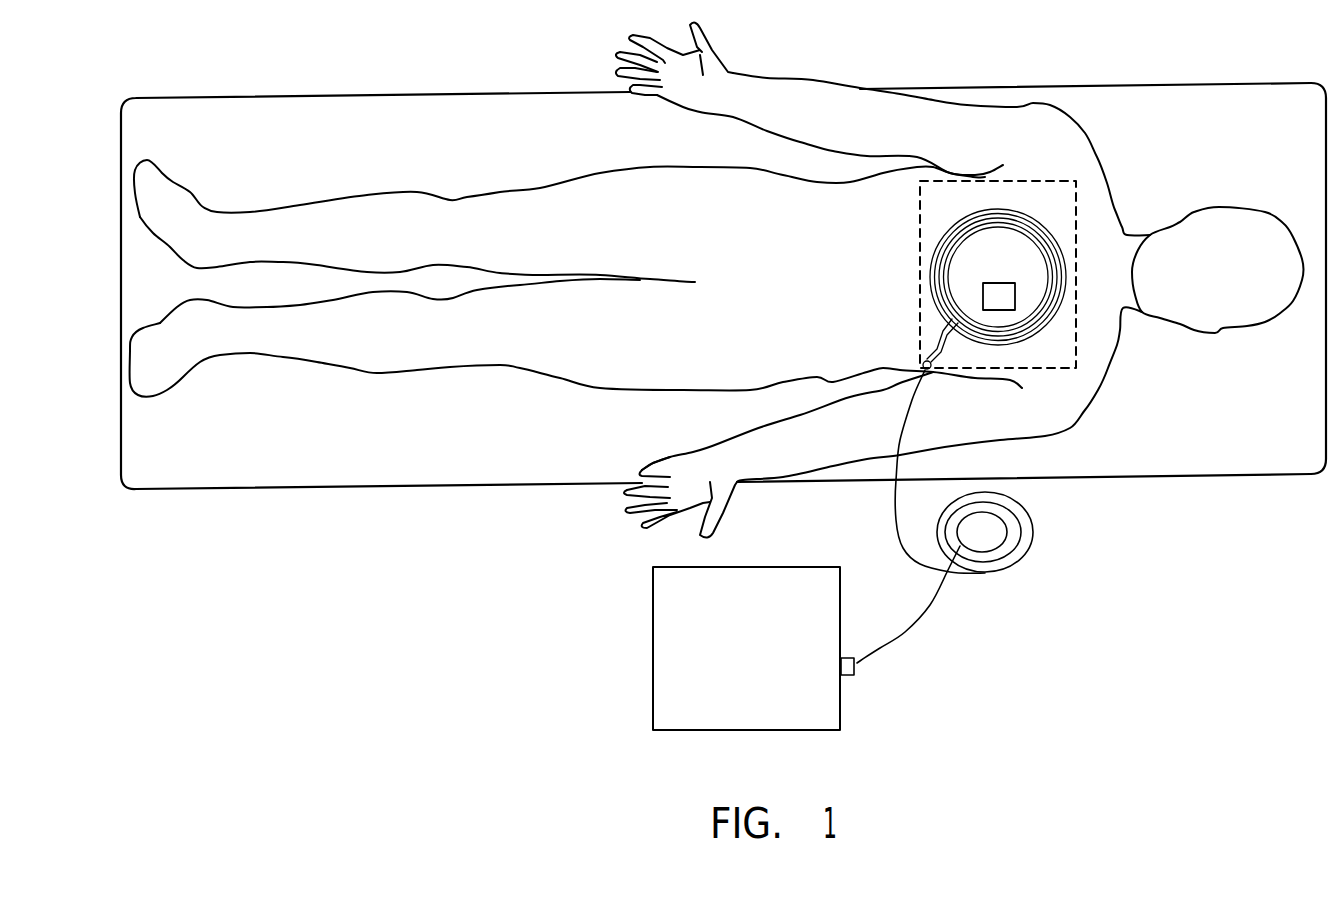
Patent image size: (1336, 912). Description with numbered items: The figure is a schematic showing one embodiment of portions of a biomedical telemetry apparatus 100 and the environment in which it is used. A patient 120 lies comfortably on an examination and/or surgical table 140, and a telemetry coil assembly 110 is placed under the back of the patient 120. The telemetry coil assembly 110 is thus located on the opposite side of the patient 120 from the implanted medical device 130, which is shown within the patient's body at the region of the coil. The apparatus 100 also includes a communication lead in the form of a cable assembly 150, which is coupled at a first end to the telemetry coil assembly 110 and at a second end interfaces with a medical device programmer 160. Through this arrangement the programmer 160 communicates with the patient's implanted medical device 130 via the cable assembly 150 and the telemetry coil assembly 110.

The biomedical telemetry apparatus 100 is at (1102, 660).
The telemetry coil assembly 110 is at (1057, 368).
The patient 120 is at (1105, 380).
The implanted medical device 130 is at (997, 283).
The examination and/or surgical table 140 is at (1220, 477).
The cable assembly 150 is at (1035, 527).
The medical device programmer 160 is at (780, 565).